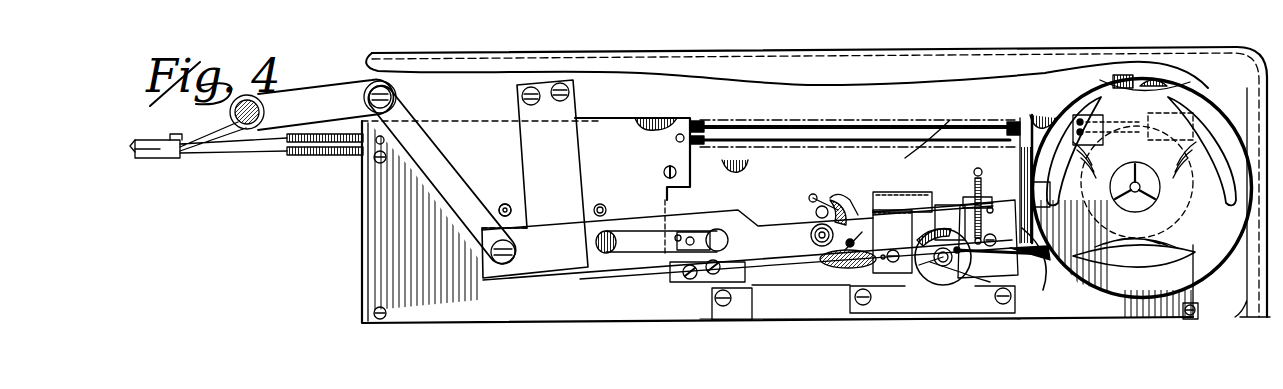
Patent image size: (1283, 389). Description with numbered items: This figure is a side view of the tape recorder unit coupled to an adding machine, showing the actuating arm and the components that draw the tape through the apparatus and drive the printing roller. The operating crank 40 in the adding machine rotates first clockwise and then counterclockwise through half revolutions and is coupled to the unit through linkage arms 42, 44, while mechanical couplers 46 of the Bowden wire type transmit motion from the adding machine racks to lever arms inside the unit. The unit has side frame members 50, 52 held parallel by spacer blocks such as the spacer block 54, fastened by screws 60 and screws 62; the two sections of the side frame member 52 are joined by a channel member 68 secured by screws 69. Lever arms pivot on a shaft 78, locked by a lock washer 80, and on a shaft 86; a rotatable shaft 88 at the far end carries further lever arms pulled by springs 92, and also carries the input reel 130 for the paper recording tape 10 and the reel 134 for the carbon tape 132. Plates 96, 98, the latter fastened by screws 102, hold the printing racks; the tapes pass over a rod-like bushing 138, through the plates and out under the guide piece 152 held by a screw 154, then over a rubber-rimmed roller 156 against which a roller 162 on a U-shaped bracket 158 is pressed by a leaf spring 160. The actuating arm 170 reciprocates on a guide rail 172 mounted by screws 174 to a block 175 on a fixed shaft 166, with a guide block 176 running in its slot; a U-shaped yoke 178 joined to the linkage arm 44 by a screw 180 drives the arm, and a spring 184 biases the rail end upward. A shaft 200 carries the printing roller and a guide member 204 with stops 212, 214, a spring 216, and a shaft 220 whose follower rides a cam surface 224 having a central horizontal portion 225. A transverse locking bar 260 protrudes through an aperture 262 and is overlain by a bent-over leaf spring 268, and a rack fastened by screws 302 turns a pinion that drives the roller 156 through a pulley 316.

The paper recording tape 10 is at (1027, 236).
The operating crank 40 is at (242, 128).
The linkage arm 42 is at (338, 102).
The linkage arm 44 is at (402, 112).
The mechanical couplers 46 is at (313, 166).
The side frame member 50 is at (658, 120).
The side frame member 52 is at (608, 135).
The spacer block 54 is at (1199, 310).
The screws 60 is at (1188, 316).
The screws 62 is at (372, 160).
The channel member 68 is at (950, 265).
The screws 69 is at (720, 306).
The shaft 78 is at (500, 207).
The lock washer 80 is at (510, 205).
The shaft 86 is at (604, 204).
The rotatable shaft 88 is at (1128, 192).
The springs 92 is at (749, 114).
The plate 96 is at (738, 163).
The plate 98 is at (908, 157).
The screws 102 is at (664, 172).
The input reel 130 is at (1153, 80).
The carbon tape 132 is at (1040, 262).
The reel 134 is at (1120, 76).
The rod-like bushing 138 is at (1107, 92).
The guide piece 152 is at (882, 276).
The screw 154 is at (893, 263).
The roller 156 is at (932, 304).
The U-shaped bracket 158 is at (942, 212).
The leaf spring 160 is at (890, 192).
The roller 162 is at (992, 234).
The fixed shaft 166 is at (706, 230).
The actuating arm 170 is at (770, 212).
The guide rail 172 is at (770, 270).
The screws 174 is at (710, 275).
The block 175 is at (682, 272).
The guide block 176 is at (678, 234).
The U-shaped yoke 178 is at (530, 124).
The screw 180 is at (504, 265).
The spring 184 is at (990, 206).
The shaft 200 is at (811, 237).
The guide member 204 is at (830, 198).
The stop 212 is at (808, 196).
The stop 214 is at (841, 202).
The spring 216 is at (812, 194).
The shaft 220 is at (816, 213).
The cam surface 224 is at (870, 220).
The central horizontal portion 225 is at (921, 206).
The transverse locking bar 260 is at (978, 168).
The aperture 262 is at (965, 198).
The bent-over leaf spring 268 is at (983, 200).
The screws 302 is at (851, 239).
The pulley 316 is at (960, 276).